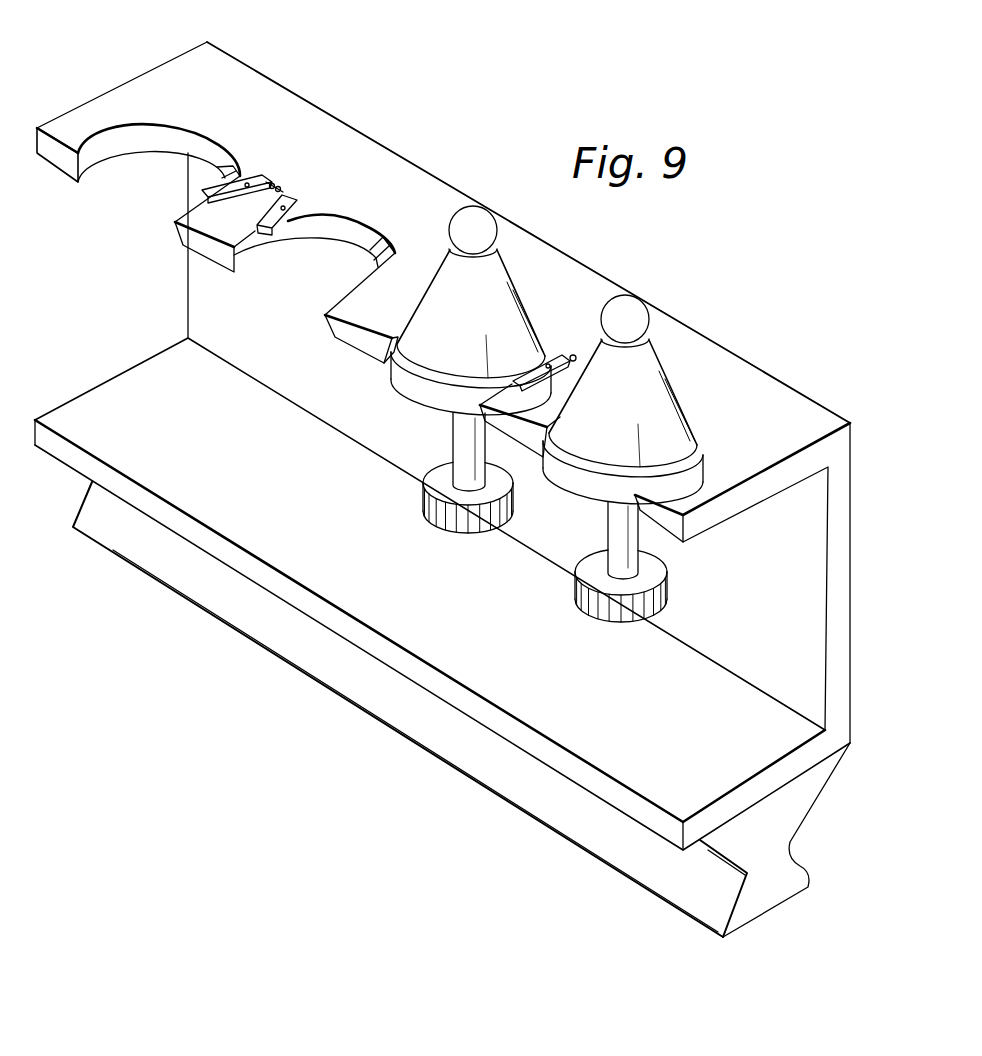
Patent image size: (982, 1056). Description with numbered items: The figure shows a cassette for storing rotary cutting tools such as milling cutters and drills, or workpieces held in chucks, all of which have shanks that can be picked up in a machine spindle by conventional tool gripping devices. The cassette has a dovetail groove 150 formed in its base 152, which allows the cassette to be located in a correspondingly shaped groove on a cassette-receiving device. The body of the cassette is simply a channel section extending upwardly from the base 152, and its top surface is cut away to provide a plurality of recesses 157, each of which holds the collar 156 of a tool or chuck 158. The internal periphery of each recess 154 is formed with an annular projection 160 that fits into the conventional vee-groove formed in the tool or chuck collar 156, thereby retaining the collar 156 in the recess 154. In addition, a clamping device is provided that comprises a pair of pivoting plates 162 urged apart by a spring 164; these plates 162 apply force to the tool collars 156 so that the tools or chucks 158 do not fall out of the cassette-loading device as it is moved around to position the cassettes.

The dovetail groove 150 is at (525, 797).
The base 152 is at (777, 880).
The recess 154 is at (153, 217).
The collar 156 is at (692, 465).
The recesses 157 is at (403, 380).
The tool or chuck 158 is at (430, 525).
The annular projection 160 is at (142, 152).
The pivoting plates 162 is at (251, 177).
The spring 164 is at (281, 187).